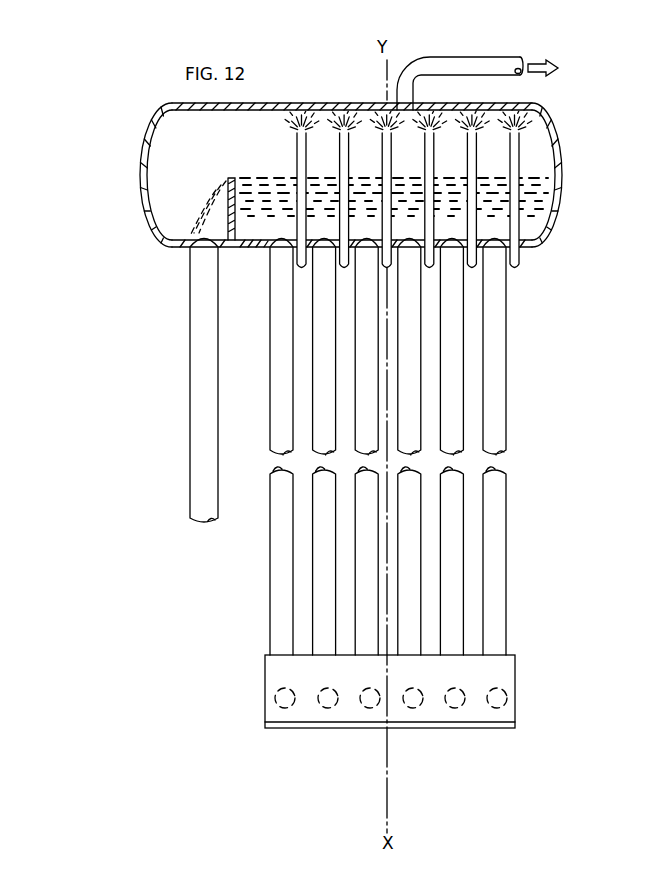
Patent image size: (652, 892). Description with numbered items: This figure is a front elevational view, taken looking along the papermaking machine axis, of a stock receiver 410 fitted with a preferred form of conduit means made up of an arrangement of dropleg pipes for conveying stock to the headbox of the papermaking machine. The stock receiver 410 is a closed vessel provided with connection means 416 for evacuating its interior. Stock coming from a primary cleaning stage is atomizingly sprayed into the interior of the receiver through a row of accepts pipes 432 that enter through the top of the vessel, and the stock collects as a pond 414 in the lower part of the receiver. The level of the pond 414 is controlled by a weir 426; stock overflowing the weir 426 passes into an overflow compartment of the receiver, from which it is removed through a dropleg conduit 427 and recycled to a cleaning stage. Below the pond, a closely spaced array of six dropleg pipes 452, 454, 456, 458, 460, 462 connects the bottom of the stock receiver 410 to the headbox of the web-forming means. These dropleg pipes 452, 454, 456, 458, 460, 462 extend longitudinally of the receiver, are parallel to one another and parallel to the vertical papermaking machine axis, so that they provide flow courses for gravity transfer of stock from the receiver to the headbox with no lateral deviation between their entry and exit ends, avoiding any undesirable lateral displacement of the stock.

The stock receiver 410 is at (503, 103).
The pond 414 is at (380, 224).
The connection means 416 is at (447, 57).
The weir 426 is at (230, 220).
The dropleg conduit 427 is at (190, 349).
The accepts pipes 432 is at (518, 163).
The dropleg pipe 452 is at (270, 383).
The dropleg pipe 454 is at (313, 346).
The dropleg pipe 456 is at (378, 403).
The dropleg pipe 458 is at (421, 371).
The dropleg pipe 460 is at (463, 343).
The dropleg pipe 462 is at (506, 320).